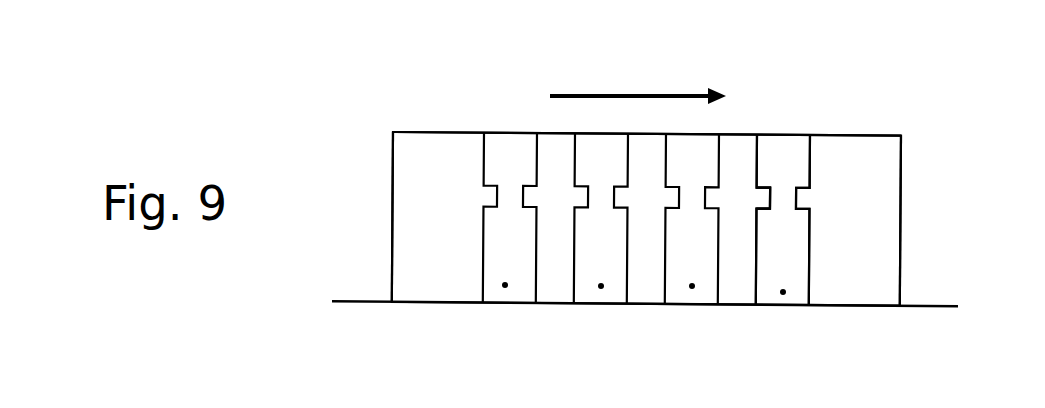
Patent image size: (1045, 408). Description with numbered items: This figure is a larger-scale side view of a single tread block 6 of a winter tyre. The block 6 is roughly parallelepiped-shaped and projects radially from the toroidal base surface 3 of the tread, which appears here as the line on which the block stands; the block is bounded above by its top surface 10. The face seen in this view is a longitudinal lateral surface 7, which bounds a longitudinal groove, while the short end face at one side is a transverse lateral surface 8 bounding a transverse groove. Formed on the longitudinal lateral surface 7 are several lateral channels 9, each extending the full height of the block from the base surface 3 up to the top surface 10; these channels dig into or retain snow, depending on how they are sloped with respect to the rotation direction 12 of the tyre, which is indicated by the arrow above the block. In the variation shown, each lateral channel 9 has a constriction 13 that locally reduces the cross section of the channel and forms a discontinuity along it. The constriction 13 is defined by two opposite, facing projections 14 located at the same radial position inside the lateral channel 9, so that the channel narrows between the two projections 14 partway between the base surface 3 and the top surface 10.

The base surface 3 is at (352, 300).
The block 6 is at (949, 206).
The longitudinal lateral surface 7 is at (432, 168).
The transverse lateral surface 8 is at (391, 162).
The lateral channel 9 is at (506, 288).
The top surface 10 is at (838, 133).
The rotation direction 12 is at (606, 94).
The constriction 13 is at (792, 167).
The projection 14 is at (766, 193).